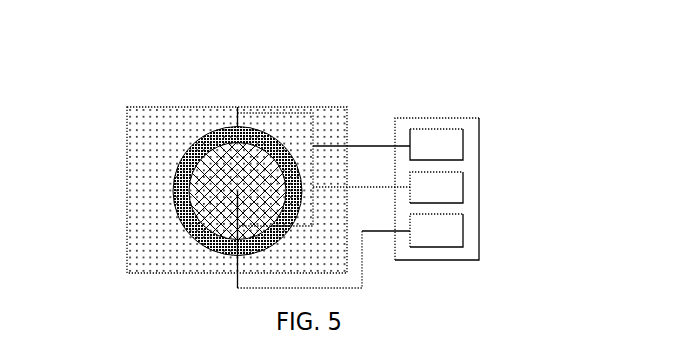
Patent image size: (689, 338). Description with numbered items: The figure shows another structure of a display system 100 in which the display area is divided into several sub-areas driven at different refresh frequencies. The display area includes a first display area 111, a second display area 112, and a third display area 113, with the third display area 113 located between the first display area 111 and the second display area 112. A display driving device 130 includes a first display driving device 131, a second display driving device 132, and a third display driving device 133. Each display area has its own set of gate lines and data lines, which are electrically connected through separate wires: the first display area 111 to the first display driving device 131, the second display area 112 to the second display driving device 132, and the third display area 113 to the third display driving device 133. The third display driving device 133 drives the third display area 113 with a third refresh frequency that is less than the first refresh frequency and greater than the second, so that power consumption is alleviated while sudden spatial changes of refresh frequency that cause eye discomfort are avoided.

The display system 100 is at (462, 58).
The first display area 111 is at (175, 184).
The second display area 112 is at (196, 177).
The third display area 113 is at (173, 192).
The display driving device 130 is at (481, 164).
The first display driving device 131 is at (440, 179).
The second display driving device 132 is at (465, 223).
The third display driving device 133 is at (440, 135).